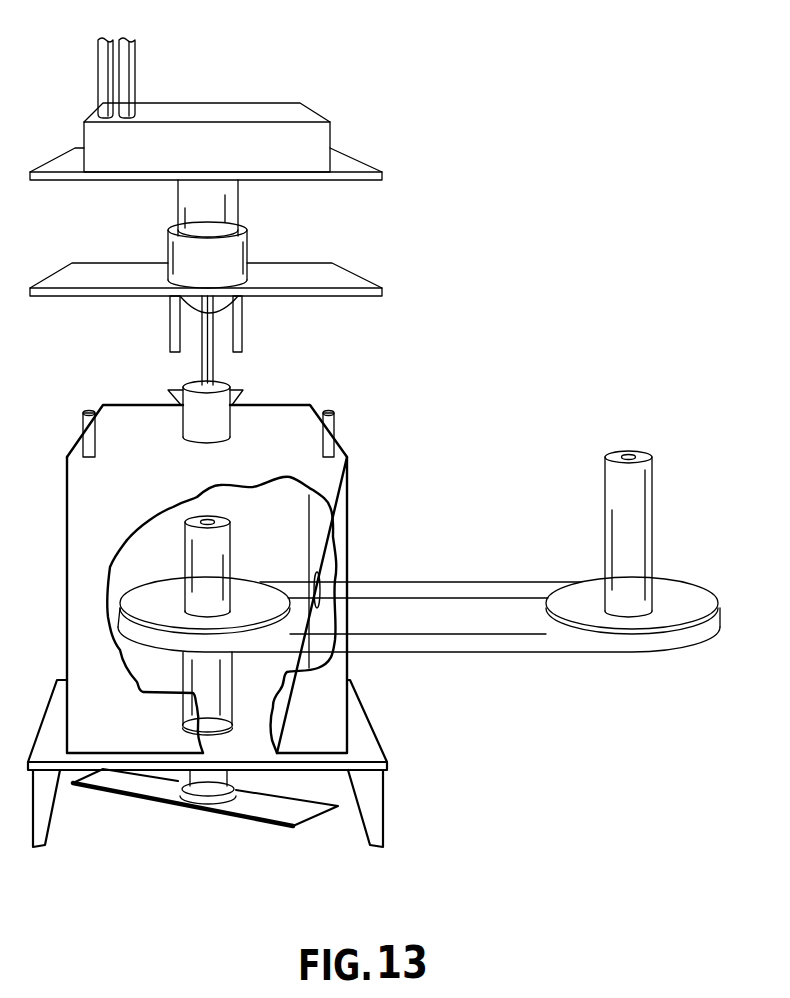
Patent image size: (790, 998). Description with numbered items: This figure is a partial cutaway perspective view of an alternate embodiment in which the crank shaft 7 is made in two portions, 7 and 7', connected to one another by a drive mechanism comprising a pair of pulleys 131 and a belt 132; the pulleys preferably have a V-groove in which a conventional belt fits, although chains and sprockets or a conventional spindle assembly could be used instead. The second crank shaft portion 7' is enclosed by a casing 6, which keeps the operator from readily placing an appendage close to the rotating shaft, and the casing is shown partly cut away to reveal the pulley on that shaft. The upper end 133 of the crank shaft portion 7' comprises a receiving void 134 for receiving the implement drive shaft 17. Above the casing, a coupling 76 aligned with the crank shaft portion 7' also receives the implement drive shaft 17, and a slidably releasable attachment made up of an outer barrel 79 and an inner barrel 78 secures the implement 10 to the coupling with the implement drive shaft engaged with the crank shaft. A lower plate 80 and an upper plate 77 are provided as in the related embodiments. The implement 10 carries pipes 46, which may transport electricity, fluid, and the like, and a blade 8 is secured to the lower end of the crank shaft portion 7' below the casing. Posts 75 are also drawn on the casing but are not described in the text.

The pipes 46 is at (127, 55).
The implement 10 is at (233, 112).
The upper plate 77 is at (338, 180).
The inner barrel 78 is at (192, 200).
The outer barrel 79 is at (187, 255).
The lower plate 80 is at (332, 293).
The implement drive shaft 17 is at (207, 360).
The coupling 76 is at (200, 405).
The casing 6 is at (293, 413).
The posts 75 is at (82, 423).
The receiving void 134 is at (207, 522).
The upper end 133 is at (232, 518).
The pulleys 131 is at (150, 600).
The belt 132 is at (480, 647).
The crank shaft 7 is at (612, 534).
The crank shaft portion 7' is at (290, 728).
The blade 8 is at (273, 802).